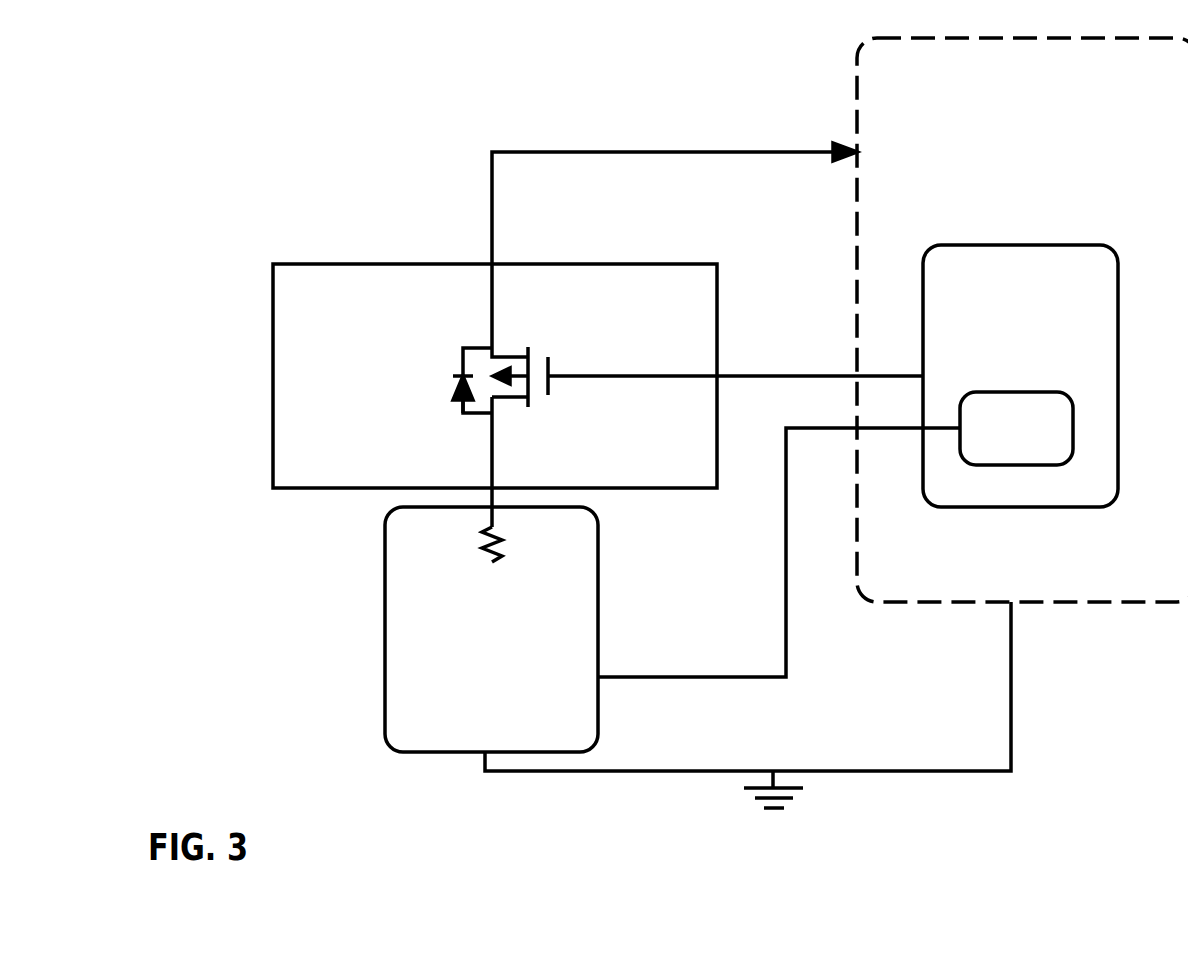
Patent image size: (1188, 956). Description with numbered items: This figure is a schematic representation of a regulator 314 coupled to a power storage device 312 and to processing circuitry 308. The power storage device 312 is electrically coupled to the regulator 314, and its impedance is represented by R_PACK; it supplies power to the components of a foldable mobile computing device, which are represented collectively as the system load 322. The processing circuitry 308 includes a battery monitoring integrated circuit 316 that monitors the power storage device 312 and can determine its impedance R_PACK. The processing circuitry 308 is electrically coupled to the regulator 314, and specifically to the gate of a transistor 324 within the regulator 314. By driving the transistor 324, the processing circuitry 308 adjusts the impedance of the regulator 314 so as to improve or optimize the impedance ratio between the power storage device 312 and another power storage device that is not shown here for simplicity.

The processing circuitry 308 is at (1001, 339).
The power storage device 312 is at (471, 684).
The regulator 314 is at (586, 266).
The battery monitoring integrated circuit 316 is at (996, 442).
The system load 322 is at (1001, 104).
The transistor 324 is at (503, 353).